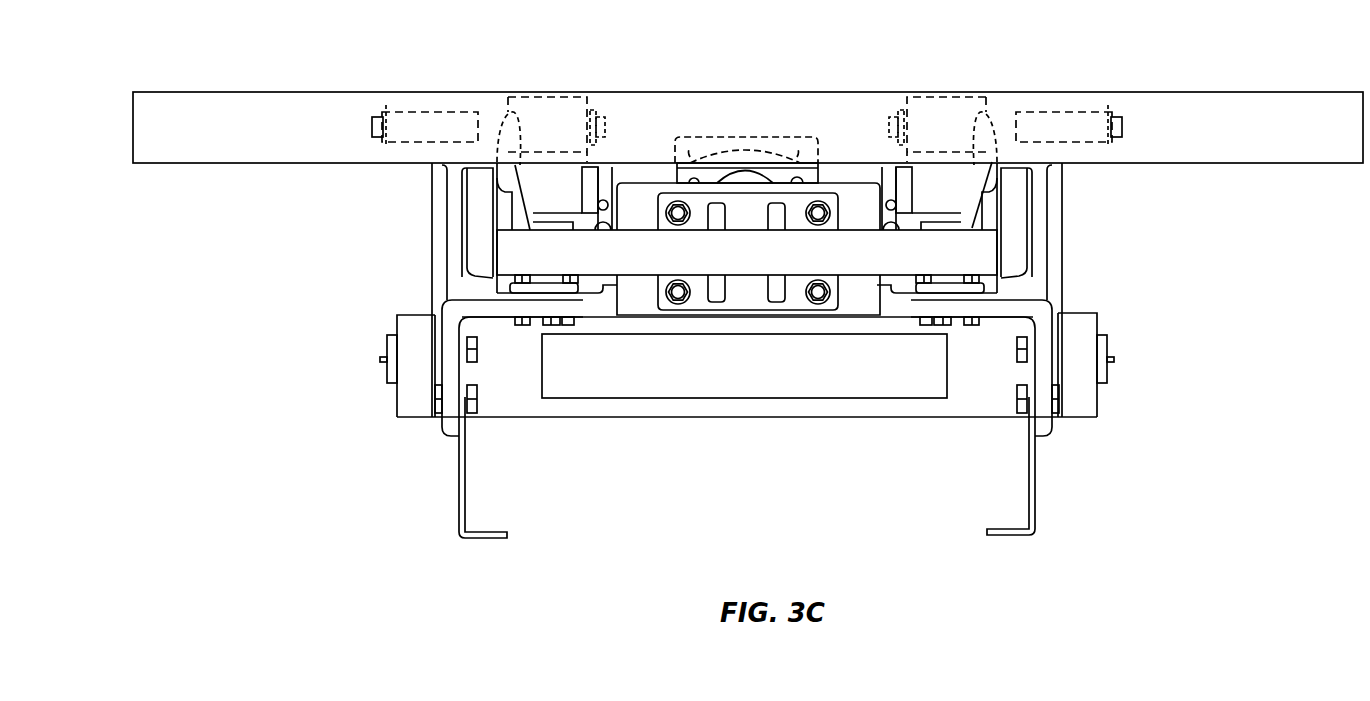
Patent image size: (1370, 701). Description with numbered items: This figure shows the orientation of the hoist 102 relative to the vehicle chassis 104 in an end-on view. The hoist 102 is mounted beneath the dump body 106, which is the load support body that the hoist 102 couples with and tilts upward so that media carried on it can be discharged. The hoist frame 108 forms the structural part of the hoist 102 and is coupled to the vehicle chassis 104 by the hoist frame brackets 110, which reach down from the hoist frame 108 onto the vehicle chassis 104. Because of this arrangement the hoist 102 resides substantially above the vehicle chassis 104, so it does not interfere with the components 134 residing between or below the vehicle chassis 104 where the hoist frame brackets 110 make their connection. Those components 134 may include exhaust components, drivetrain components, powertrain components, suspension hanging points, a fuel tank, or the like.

The hoist 102 is at (442, 223).
The vehicle chassis 104 is at (1037, 480).
The dump body 106 is at (1187, 113).
The hoist frame 108 is at (857, 223).
The hoist frame brackets 110 is at (1042, 370).
The components 134 is at (764, 377).